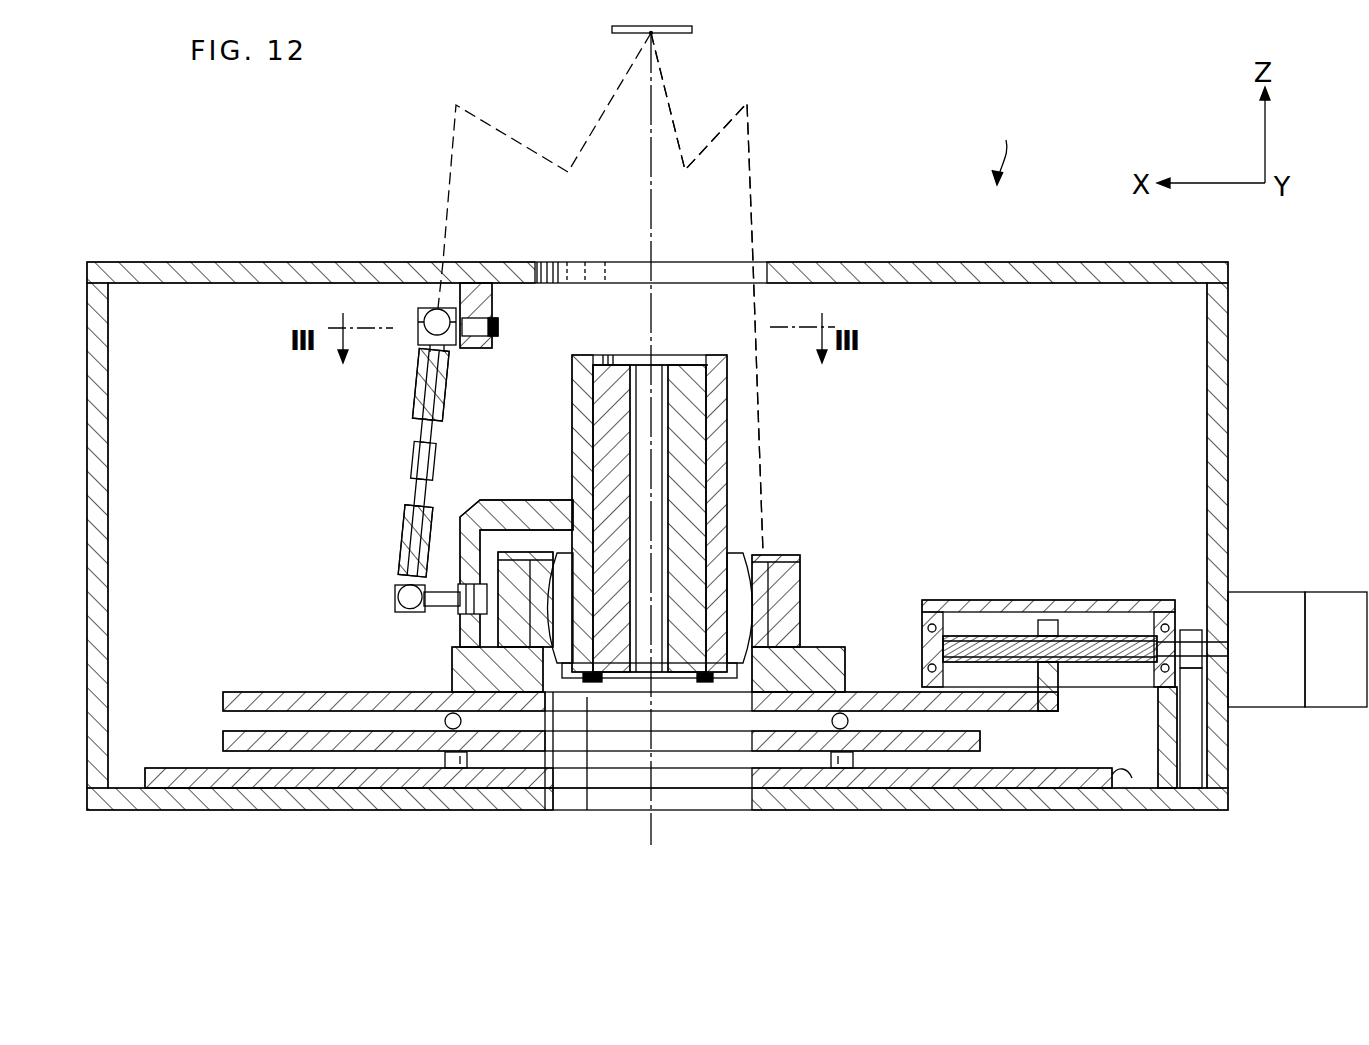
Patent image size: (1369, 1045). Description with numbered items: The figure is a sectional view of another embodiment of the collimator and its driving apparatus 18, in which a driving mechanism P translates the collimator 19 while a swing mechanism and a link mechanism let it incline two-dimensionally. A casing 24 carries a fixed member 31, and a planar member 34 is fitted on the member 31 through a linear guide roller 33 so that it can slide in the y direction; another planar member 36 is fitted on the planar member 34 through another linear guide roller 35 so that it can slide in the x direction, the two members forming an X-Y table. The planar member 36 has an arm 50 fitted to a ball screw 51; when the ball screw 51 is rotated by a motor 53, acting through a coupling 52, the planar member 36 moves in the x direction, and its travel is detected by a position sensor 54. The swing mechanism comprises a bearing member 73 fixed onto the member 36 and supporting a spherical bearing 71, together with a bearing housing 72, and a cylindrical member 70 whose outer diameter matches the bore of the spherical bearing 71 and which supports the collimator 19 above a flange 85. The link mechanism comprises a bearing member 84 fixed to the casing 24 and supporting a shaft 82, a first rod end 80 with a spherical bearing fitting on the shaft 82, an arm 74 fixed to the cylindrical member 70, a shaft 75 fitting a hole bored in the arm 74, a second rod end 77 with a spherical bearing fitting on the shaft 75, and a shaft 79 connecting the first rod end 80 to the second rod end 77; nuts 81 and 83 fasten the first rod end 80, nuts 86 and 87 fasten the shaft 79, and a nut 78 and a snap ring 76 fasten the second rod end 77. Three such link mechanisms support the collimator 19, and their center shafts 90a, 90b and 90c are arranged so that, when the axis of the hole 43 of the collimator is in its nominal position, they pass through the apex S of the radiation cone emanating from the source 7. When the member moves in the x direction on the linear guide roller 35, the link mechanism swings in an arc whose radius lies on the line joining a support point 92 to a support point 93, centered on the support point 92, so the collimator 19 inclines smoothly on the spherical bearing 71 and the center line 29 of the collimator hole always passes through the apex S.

The sample 7 is at (692, 29).
The apex of the cone of the radiation S is at (656, 36).
The driving apparatus 18 is at (1008, 143).
The collimator 19 is at (710, 465).
The casing 24 is at (1045, 262).
The center line of the collimator hole 29 is at (655, 832).
The member 31 is at (1132, 778).
The linear guide roller 33 is at (460, 770).
The planar member 34 is at (223, 737).
The linear guide roller 35 is at (448, 713).
The planar member 36 is at (266, 692).
The hole of the collimator 43 is at (656, 388).
The arm 50 is at (1048, 620).
The ball screw 51 is at (985, 636).
The coupling 52 is at (1187, 630).
The motor 53 is at (1262, 592).
The position sensor 54 is at (1334, 592).
The cylindrical member 70 is at (728, 403).
The spherical bearing 71 is at (745, 552).
The bearing housing 72 is at (786, 556).
The bearing member 73 is at (806, 625).
The arm 74 is at (532, 500).
The shaft 75 is at (455, 625).
The snap ring 76 is at (472, 612).
The second rod end 77 is at (412, 612).
The nut 78 is at (395, 603).
The shaft 79 is at (412, 482).
The first rod end 80 is at (418, 400).
The nut 81 is at (425, 345).
The shaft 82 is at (452, 347).
The nut 83 is at (497, 338).
The bearing member 84 is at (495, 298).
The flange 85 is at (715, 680).
The nut 86 is at (448, 415).
The nut 87 is at (402, 518).
The center shaft 90a is at (449, 168).
The center shaft 90b is at (756, 170).
The center shaft 90c is at (772, 293).
The support point 92 is at (425, 316).
The support point 93 is at (398, 592).
The driving mechanism P is at (1085, 688).